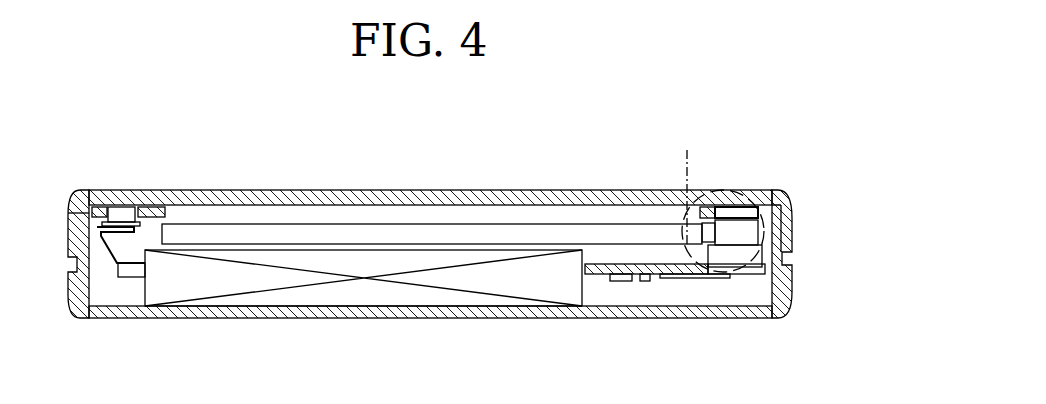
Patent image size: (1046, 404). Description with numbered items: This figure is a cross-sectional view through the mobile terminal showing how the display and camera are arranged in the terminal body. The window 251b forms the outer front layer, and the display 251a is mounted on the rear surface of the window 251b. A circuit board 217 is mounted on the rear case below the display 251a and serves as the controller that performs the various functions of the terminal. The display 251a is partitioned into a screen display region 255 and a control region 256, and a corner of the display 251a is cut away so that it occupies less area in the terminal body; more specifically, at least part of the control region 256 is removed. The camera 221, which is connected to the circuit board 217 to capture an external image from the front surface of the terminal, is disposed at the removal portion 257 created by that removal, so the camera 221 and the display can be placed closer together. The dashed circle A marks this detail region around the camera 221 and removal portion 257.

The display 251a is at (440, 216).
The window 251b is at (517, 202).
The circuit board 217 is at (600, 272).
The camera 221 is at (750, 232).
The screen display region 255 is at (687, 158).
The control region 256 is at (736, 158).
The removal portion 257 is at (707, 237).
The detail region A is at (744, 183).